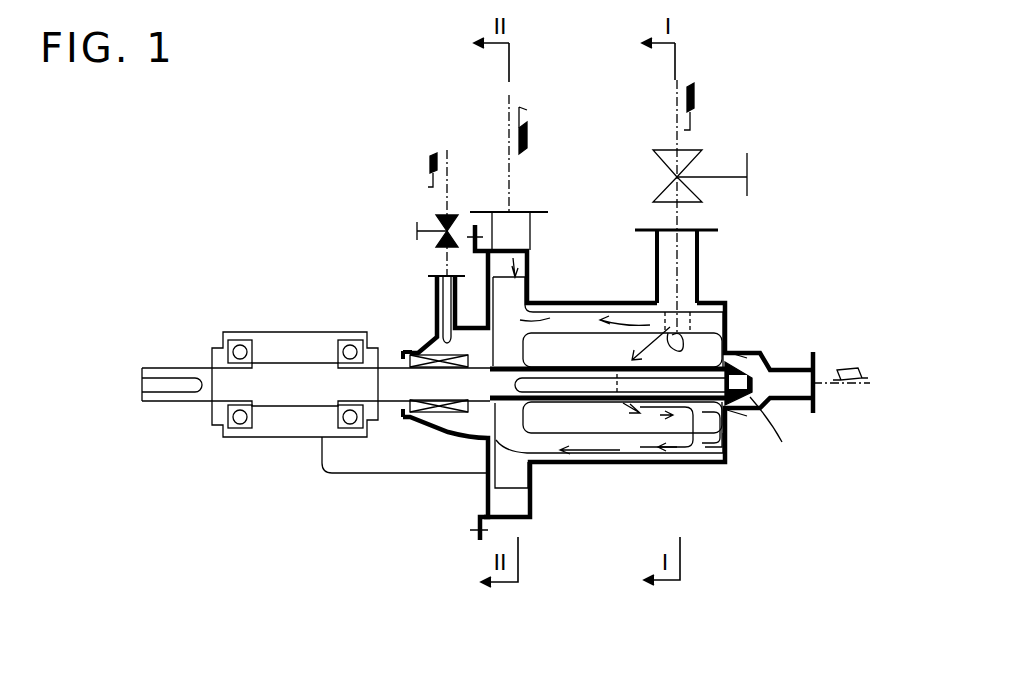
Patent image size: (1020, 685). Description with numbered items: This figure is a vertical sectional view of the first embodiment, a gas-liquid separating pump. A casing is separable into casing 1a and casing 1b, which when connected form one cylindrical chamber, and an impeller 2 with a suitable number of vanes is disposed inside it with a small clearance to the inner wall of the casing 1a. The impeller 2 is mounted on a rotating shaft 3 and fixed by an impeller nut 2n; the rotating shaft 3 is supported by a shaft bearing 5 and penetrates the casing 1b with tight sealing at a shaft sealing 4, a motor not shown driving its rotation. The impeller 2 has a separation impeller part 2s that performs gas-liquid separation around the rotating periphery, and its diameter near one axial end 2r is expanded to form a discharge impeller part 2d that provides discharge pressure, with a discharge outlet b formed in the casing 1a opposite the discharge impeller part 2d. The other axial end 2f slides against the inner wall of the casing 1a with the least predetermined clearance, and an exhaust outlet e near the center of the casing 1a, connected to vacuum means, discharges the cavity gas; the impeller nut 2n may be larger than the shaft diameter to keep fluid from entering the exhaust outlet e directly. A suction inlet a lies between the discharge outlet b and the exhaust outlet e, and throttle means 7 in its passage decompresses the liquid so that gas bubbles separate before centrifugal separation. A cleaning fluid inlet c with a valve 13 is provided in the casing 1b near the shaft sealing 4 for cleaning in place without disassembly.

The casing 1a is at (697, 463).
The casing 1b is at (450, 431).
The impeller 2 is at (530, 447).
The discharge impeller part 2d is at (508, 472).
The one axial end of the impeller 2r is at (500, 443).
The separation impeller part 2s is at (640, 450).
The other axial end of the impeller 2f is at (725, 445).
The impeller nut 2n is at (752, 400).
The rotating shaft 3 is at (447, 383).
The shaft sealing 4 is at (427, 343).
The shaft bearing 5 is at (318, 332).
The throttle means 7 is at (715, 177).
The valve 13 is at (433, 218).
The suction inlet a is at (685, 255).
The discharge outlet b is at (516, 223).
The cleaning fluid inlet c is at (443, 298).
The exhaust outlet e is at (788, 378).